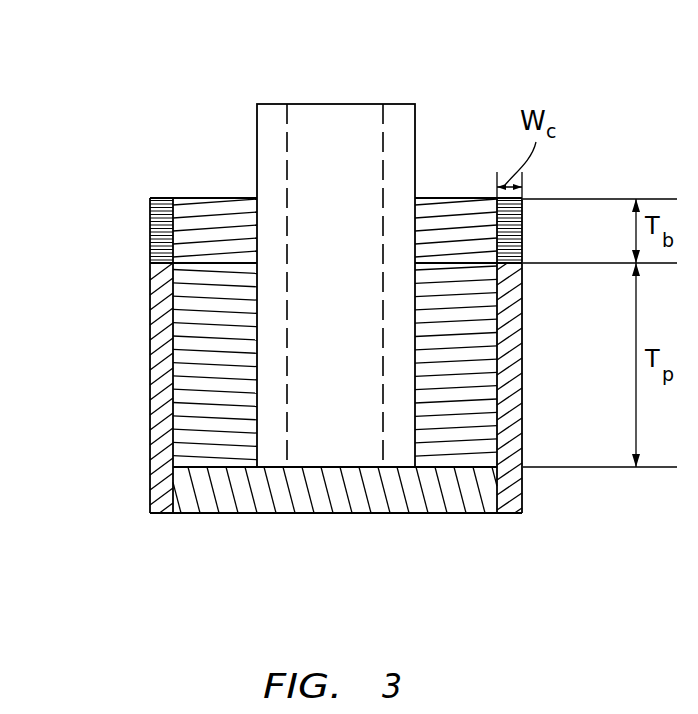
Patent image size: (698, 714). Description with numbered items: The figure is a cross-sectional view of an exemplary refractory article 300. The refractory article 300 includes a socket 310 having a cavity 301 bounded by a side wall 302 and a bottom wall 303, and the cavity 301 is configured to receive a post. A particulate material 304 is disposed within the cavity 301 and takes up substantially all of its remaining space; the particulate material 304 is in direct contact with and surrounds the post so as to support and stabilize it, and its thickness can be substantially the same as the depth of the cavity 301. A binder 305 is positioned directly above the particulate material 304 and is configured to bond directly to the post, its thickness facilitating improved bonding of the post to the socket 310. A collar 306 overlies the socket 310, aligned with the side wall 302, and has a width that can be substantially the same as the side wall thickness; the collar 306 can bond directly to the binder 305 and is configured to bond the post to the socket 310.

The refractory article 300 is at (110, 56).
The cavity 301 is at (256, 131).
The side wall 302 is at (150, 385).
The bottom wall 303 is at (209, 513).
The particulate material 304 is at (205, 438).
The binder 305 is at (215, 198).
The collar 306 is at (150, 237).
The socket 310 is at (150, 335).